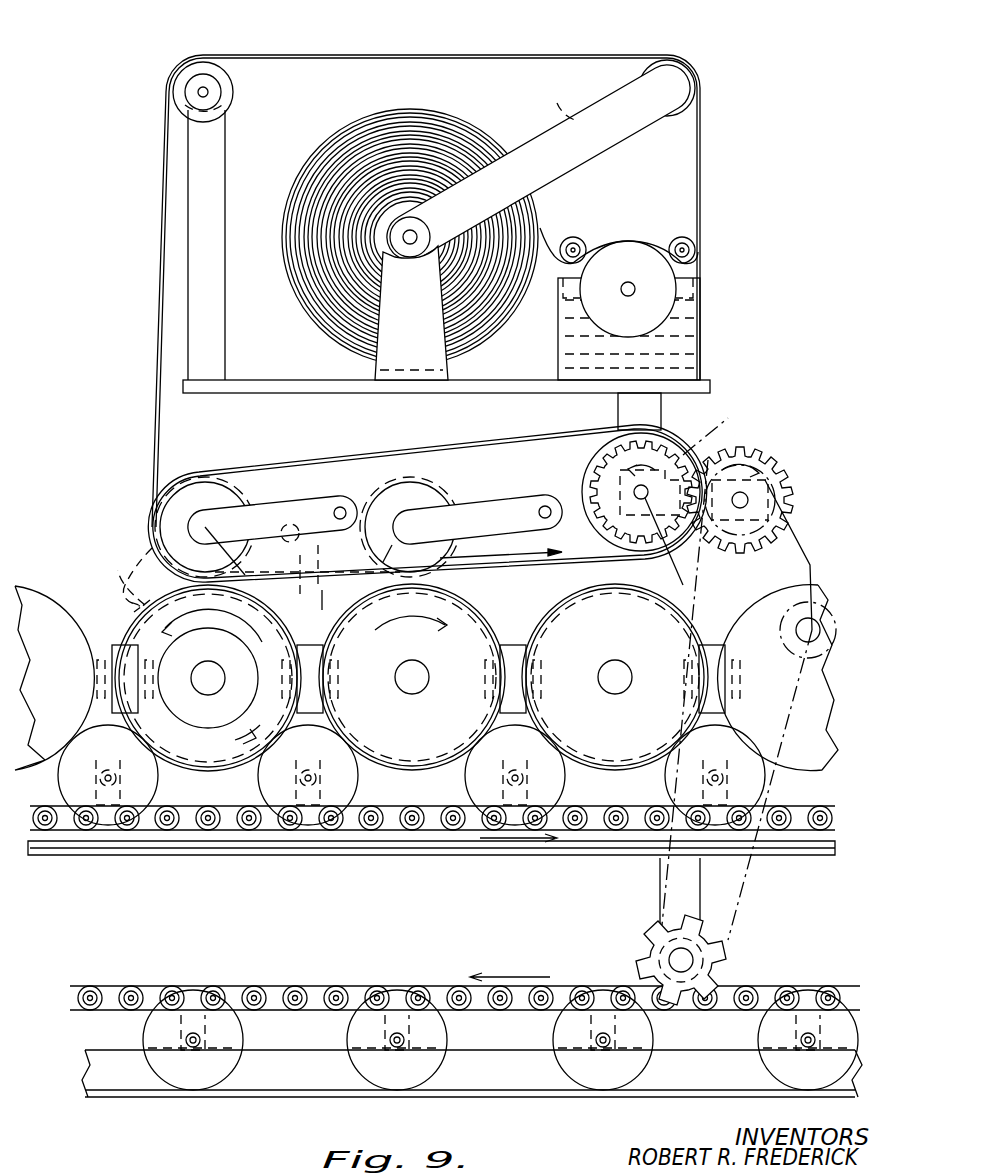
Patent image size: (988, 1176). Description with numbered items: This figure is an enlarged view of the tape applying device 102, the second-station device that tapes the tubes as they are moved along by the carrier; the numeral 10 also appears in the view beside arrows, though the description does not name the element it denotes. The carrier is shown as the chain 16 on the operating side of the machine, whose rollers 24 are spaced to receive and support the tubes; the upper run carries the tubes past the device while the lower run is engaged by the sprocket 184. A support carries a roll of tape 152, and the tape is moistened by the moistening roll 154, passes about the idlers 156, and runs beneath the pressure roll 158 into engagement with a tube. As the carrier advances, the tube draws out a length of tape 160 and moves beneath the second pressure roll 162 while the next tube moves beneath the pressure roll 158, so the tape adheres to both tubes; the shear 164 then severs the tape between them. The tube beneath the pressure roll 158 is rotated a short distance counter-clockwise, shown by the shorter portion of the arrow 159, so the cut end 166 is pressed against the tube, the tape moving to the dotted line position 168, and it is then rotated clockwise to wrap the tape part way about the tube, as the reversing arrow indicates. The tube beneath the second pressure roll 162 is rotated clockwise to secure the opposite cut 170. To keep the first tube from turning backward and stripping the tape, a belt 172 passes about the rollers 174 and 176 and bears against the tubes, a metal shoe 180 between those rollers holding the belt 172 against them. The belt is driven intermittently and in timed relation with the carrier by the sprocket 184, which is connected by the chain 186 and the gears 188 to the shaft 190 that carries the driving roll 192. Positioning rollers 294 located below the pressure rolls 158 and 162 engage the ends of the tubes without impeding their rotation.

The direction of article travel 10 is at (398, 475).
The chain 16 is at (398, 833).
The rollers 24 is at (272, 776).
The tape applying device 102 is at (117, 449).
The roll of tape 152 is at (336, 138).
The moistening roll 154 is at (632, 250).
The idlers 156 is at (205, 75).
The pressure roll 158 is at (205, 510).
The arrow 159 is at (208, 678).
The length of tape 160 is at (326, 582).
The second pressure roll 162 is at (430, 488).
The shear 164 is at (313, 560).
The cut end 166 is at (262, 612).
The dotted line position 168 is at (130, 568).
The opposite cut 170 is at (332, 626).
The belt 172 is at (545, 573).
The roller 174 is at (300, 515).
The roller 176 is at (422, 478).
The metal shoe 180 is at (285, 540).
The sprocket 184 is at (722, 968).
The chain 186 is at (817, 548).
The gears 188 is at (742, 457).
The shaft 190 is at (662, 541).
The driving roll 192 is at (605, 478).
The positioning rollers 294 is at (118, 650).